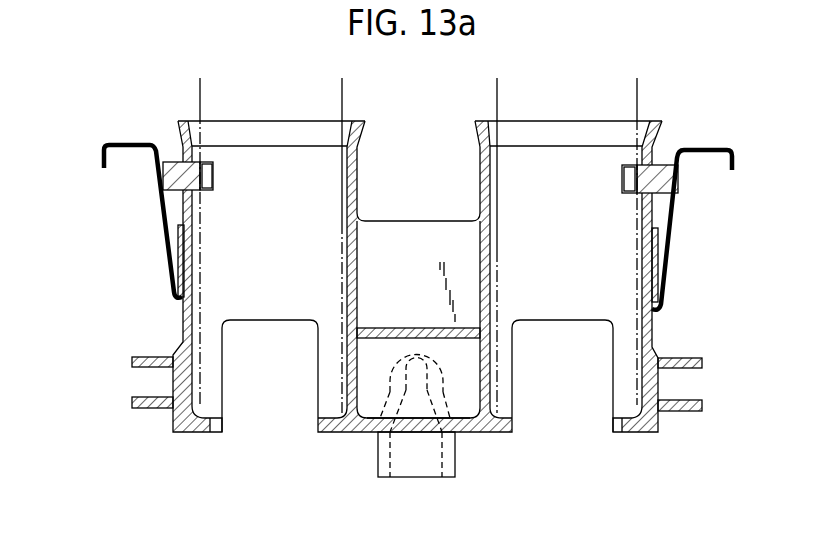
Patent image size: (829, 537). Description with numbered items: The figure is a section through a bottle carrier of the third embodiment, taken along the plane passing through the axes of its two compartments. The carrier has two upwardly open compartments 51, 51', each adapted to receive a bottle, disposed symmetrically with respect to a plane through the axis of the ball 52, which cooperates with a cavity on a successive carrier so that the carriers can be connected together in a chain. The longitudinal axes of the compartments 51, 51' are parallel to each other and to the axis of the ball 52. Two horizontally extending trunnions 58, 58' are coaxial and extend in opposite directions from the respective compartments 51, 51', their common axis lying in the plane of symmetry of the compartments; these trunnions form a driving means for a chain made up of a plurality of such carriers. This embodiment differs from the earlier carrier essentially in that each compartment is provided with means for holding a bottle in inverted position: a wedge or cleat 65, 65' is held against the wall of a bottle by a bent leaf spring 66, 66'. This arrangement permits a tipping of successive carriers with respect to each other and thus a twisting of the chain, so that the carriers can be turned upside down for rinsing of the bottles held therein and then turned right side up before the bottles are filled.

The compartment 51 is at (514, 276).
The compartment 51' is at (321, 276).
The ball 52 is at (416, 356).
The trunnion 58 is at (688, 363).
The trunnion 58' is at (140, 363).
The wedge or cleat 65 is at (665, 146).
The wedge or cleat 65' is at (215, 172).
The bent leaf spring 66 is at (693, 230).
The bent leaf spring 66' is at (113, 219).